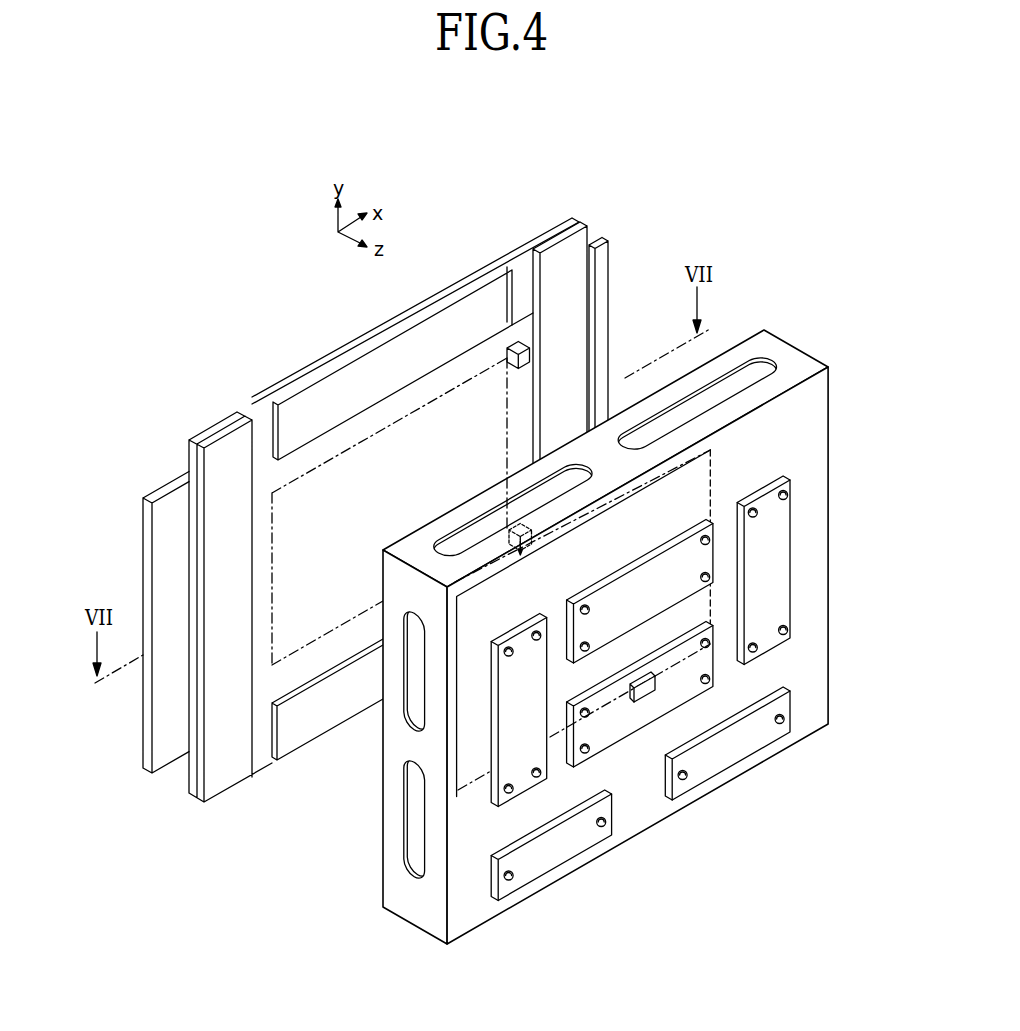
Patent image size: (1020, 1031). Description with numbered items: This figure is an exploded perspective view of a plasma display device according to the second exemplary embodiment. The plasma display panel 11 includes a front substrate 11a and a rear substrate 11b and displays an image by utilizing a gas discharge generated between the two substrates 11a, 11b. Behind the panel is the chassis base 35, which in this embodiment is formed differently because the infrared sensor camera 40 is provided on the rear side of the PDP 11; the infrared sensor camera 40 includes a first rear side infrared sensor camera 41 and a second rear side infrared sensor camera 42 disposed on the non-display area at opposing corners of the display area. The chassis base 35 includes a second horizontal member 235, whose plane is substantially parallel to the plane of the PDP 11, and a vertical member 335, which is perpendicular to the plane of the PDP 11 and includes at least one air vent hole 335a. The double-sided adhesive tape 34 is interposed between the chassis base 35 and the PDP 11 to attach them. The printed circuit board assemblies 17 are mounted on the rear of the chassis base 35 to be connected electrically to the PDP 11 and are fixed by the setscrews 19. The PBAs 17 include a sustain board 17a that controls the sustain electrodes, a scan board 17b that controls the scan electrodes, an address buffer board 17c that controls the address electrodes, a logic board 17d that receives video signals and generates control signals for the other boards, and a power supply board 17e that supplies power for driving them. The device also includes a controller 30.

The plasma display panel 11 is at (576, 284).
The front substrate 11a is at (600, 240).
The rear substrate 11b is at (545, 237).
The printed circuit board assemblies 17 is at (617, 742).
The sustain board 17a is at (766, 630).
The scan board 17b is at (518, 812).
The address buffer board 17c is at (551, 870).
The logic board 17d is at (607, 735).
The power supply board 17e is at (640, 607).
The setscrews 19 is at (505, 880).
The controller 30 is at (643, 682).
The double-sided adhesive tape 34 is at (232, 447).
The chassis base 35 is at (583, 624).
The infrared sensor camera 40 is at (415, 489).
The first rear side infrared sensor camera 41 is at (513, 342).
The second rear side infrared sensor camera 42 is at (477, 552).
The second horizontal member 235 is at (812, 444).
The vertical member 335 is at (800, 360).
The air vent hole 335a is at (410, 700).